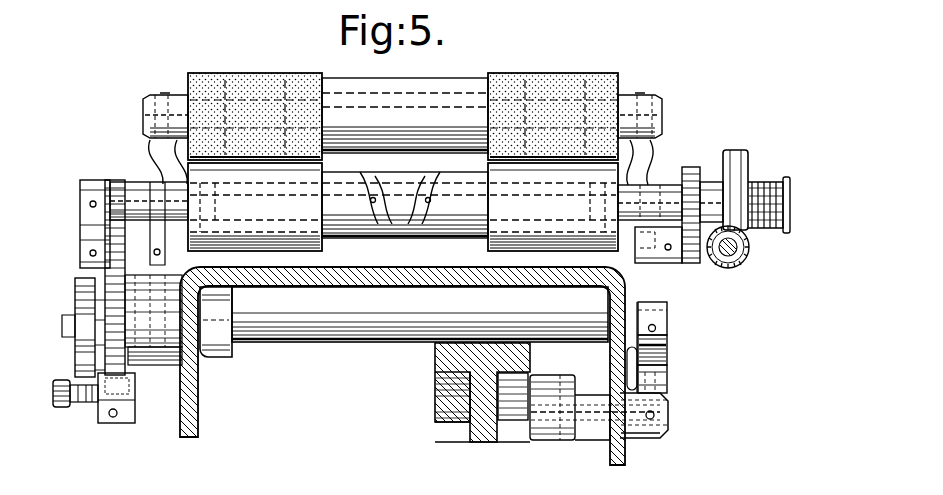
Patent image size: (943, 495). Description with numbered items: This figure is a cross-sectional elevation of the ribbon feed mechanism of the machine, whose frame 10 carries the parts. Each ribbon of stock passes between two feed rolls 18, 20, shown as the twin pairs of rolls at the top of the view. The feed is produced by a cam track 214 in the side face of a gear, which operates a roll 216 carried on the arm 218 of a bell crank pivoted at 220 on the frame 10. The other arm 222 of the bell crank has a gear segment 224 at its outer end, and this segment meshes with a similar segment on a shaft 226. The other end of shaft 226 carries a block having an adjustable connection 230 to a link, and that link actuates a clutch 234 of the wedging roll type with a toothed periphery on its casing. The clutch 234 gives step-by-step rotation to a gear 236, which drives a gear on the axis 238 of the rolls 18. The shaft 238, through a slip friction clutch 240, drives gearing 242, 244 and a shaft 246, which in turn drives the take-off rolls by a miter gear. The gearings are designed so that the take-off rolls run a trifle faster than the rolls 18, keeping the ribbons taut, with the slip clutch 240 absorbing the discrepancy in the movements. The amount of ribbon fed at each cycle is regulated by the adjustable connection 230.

The frame 10 is at (626, 279).
The feed roll 18 is at (403, 207).
The feed roll 20 is at (207, 80).
The cam track 214 is at (508, 438).
The roll 216 is at (515, 388).
The arm 218 is at (548, 392).
The pivot 220 is at (669, 415).
The arm 222 is at (652, 378).
The gear segment 224 is at (662, 355).
The shaft 226 is at (386, 343).
The adjustable connection 230 is at (58, 405).
The clutch 234 is at (83, 348).
The gear 236 is at (114, 250).
The shaft 238 is at (380, 226).
The slip friction clutch 240 is at (740, 157).
The gearing 242 is at (690, 166).
The gearing 244 is at (722, 266).
The shaft 246 is at (740, 247).